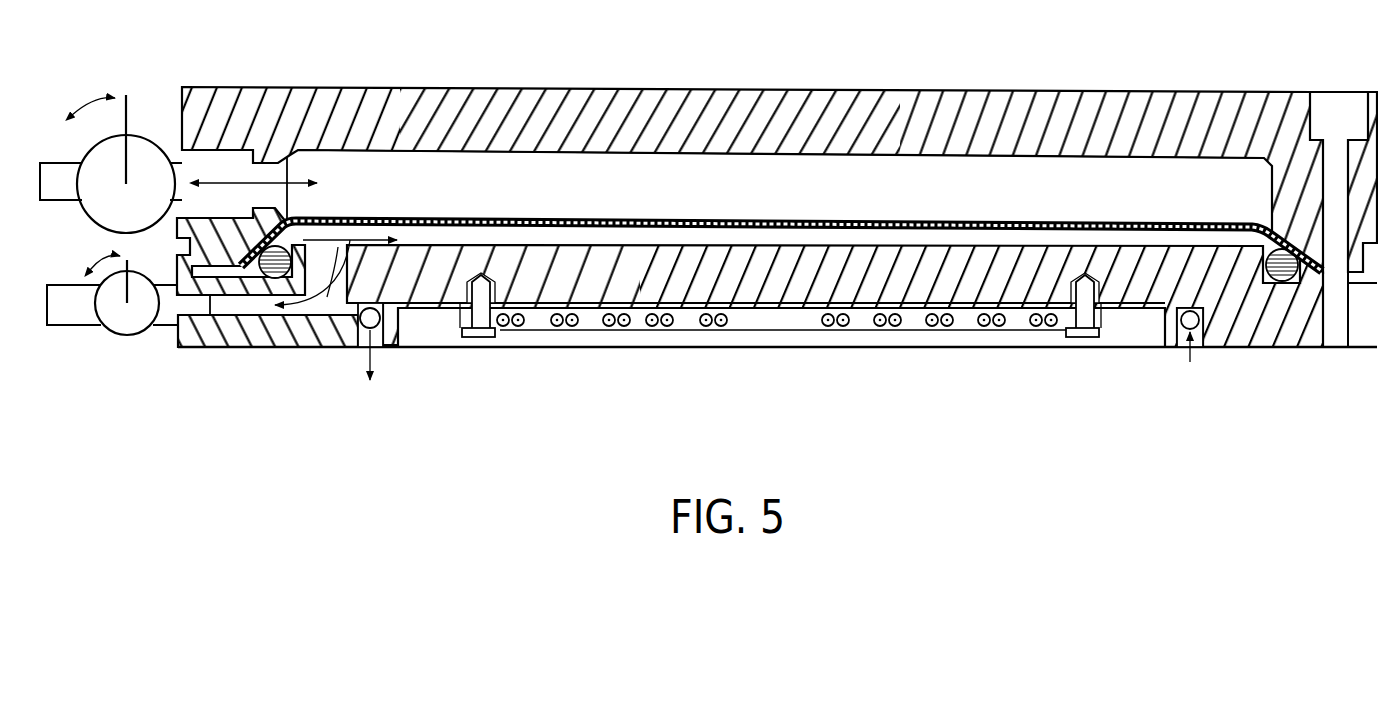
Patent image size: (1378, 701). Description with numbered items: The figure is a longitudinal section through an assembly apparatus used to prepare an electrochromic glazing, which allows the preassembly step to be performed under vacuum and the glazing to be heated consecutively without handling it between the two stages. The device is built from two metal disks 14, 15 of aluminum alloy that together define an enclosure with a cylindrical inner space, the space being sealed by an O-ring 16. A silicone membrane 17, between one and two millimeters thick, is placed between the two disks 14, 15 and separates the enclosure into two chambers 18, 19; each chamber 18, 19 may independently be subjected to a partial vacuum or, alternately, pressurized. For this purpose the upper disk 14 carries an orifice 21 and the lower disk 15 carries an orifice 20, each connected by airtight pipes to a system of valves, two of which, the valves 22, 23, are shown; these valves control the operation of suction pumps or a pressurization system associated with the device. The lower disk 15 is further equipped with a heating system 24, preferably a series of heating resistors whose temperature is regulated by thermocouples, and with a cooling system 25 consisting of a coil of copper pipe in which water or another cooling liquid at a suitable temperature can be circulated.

The metal disk 14 is at (835, 97).
The metal disk 15 is at (1243, 332).
The O-ring 16 is at (1287, 290).
The membrane 17 is at (888, 224).
The chamber 18 is at (586, 197).
The chamber 19 is at (574, 240).
The orifice 20 is at (328, 297).
The orifice 21 is at (278, 196).
The valve 22 is at (92, 158).
The valve 23 is at (118, 318).
The heating system 24 is at (528, 332).
The cooling system 25 is at (1178, 338).